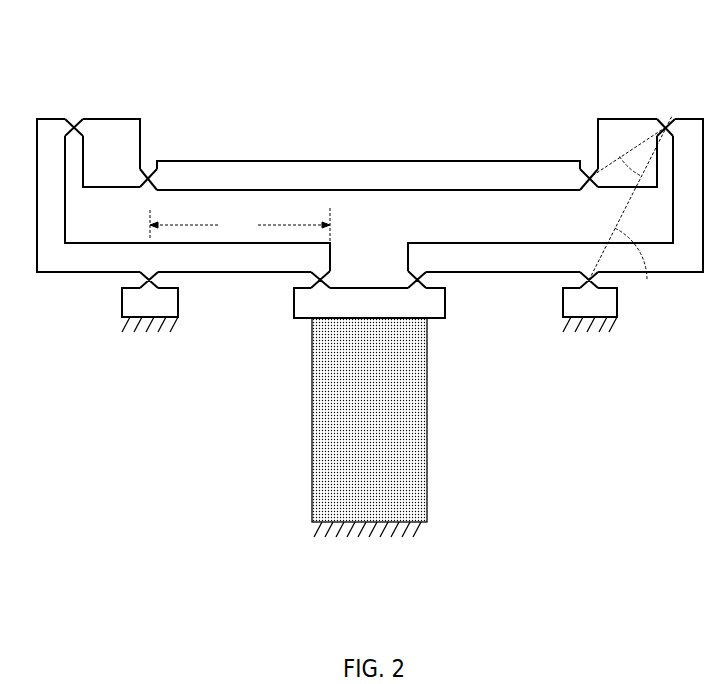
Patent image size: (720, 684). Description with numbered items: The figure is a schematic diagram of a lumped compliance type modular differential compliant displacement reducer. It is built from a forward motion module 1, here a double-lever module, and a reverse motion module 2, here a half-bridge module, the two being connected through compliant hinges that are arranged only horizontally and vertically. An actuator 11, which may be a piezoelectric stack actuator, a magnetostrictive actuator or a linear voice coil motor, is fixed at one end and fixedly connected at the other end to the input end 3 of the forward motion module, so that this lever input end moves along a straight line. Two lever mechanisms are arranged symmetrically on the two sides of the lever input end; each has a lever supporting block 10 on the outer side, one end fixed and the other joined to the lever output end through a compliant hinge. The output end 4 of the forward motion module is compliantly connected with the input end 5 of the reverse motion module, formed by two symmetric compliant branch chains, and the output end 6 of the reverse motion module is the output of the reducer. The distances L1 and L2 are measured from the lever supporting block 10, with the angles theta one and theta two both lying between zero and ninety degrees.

The forward motion module 1 is at (478, 318).
The reverse motion module 2 is at (382, 130).
The input end of the forward motion module 3 is at (306, 316).
The output end of the forward motion module 4 is at (45, 140).
The input end of the reverse motion module 5 is at (110, 138).
The output end of the reverse motion module 6 is at (250, 172).
The lever supporting block 10 is at (592, 301).
The actuator 11 is at (330, 457).